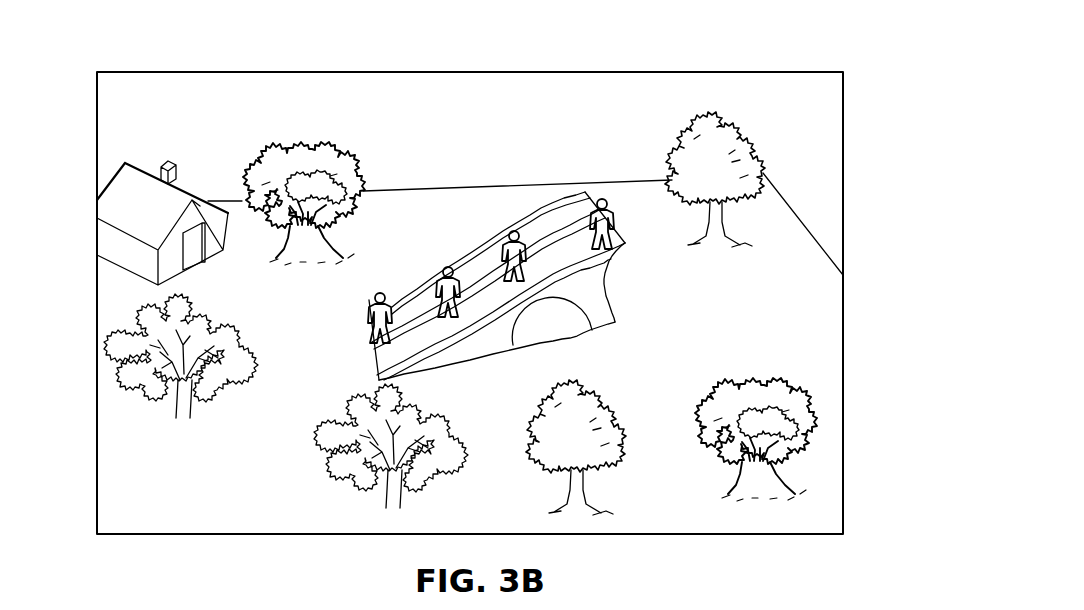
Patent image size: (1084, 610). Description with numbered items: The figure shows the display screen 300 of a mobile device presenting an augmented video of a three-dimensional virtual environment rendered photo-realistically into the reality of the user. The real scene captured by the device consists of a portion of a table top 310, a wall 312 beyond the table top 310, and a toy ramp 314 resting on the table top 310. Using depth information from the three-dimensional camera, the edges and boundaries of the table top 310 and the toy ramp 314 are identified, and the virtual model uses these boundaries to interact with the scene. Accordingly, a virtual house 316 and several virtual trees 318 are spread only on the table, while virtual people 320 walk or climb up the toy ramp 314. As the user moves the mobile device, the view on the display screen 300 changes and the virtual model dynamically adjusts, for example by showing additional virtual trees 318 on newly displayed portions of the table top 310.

The display screen 300 is at (688, 72).
The wall 312 is at (815, 127).
The virtual house 316 is at (130, 163).
The table top 310 is at (497, 208).
The toy ramp 314 is at (614, 236).
The virtual people 320 is at (371, 300).
The virtual trees 318 is at (363, 212).